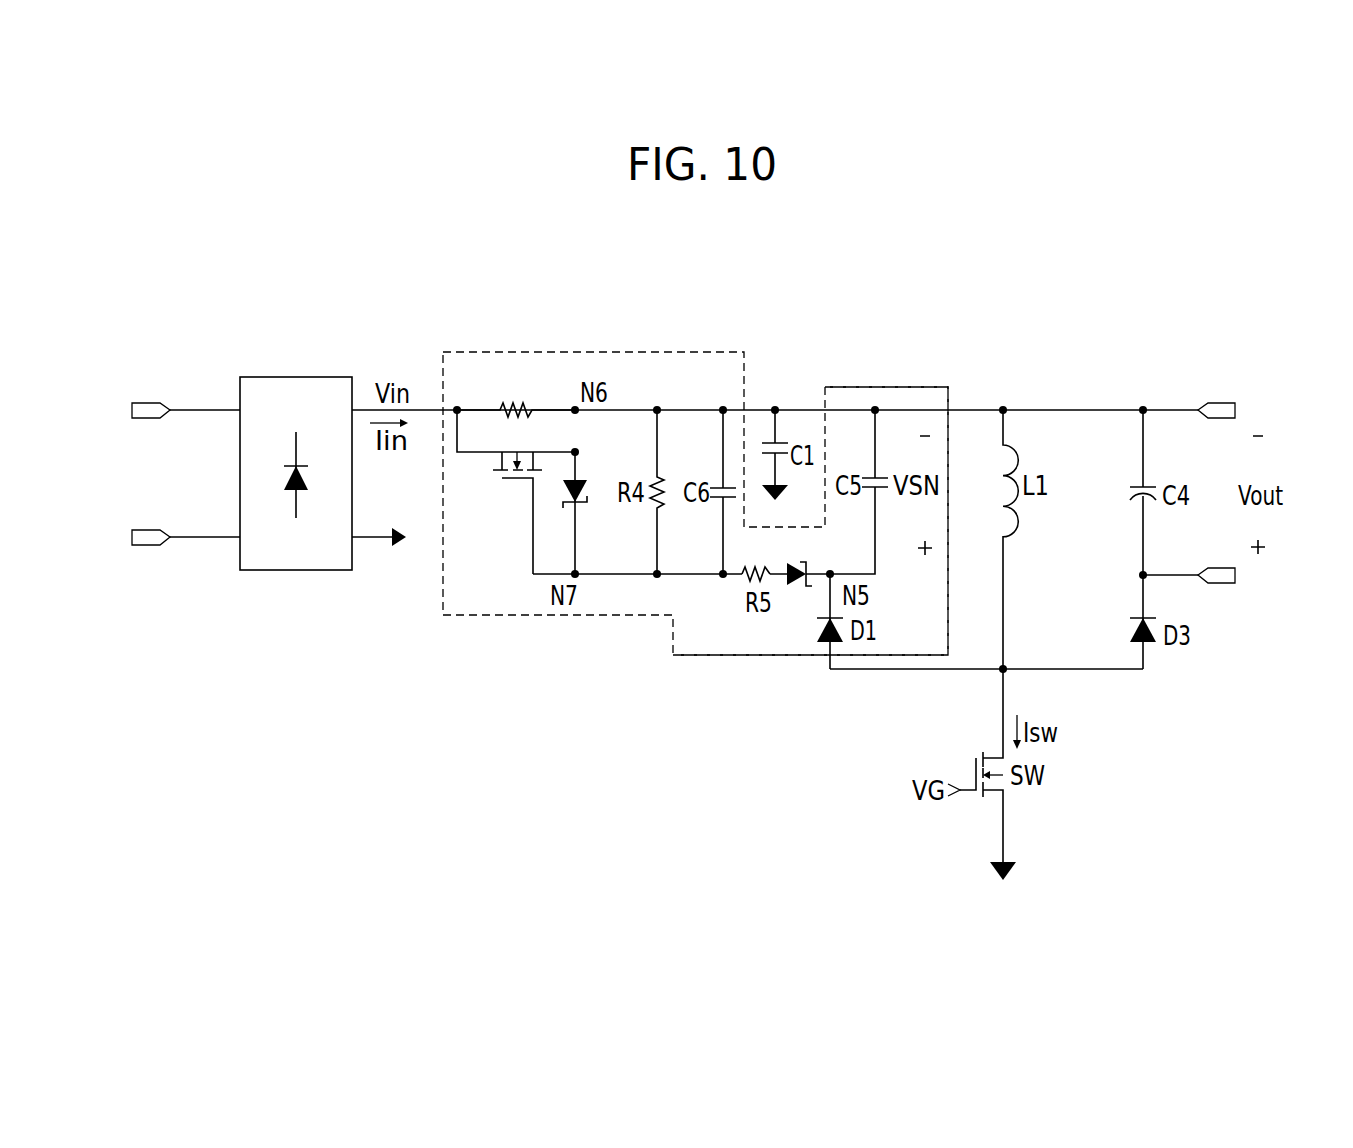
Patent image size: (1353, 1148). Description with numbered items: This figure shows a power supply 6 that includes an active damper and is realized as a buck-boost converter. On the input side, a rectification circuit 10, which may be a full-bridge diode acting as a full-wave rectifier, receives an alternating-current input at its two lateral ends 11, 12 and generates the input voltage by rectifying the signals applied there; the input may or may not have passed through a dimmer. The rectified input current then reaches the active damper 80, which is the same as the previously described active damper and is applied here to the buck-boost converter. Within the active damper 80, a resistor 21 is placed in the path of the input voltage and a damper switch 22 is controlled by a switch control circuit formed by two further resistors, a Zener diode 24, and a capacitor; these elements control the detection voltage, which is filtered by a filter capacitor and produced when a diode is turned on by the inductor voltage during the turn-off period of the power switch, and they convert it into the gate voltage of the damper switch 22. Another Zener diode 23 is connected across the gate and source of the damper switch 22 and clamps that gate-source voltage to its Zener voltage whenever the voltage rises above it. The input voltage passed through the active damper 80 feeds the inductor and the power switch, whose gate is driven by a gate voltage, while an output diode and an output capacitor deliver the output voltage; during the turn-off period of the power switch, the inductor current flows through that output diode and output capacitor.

The rectification circuit 10 is at (297, 377).
The lateral end 11 is at (150, 402).
The lateral end 12 is at (150, 528).
The damper resistor 21 is at (515, 403).
The damper switch 22 is at (515, 480).
The Zener diode 23 is at (580, 478).
The Zener diode 24 is at (798, 585).
The active damper 80 is at (570, 352).
The power supply 6 is at (931, 318).